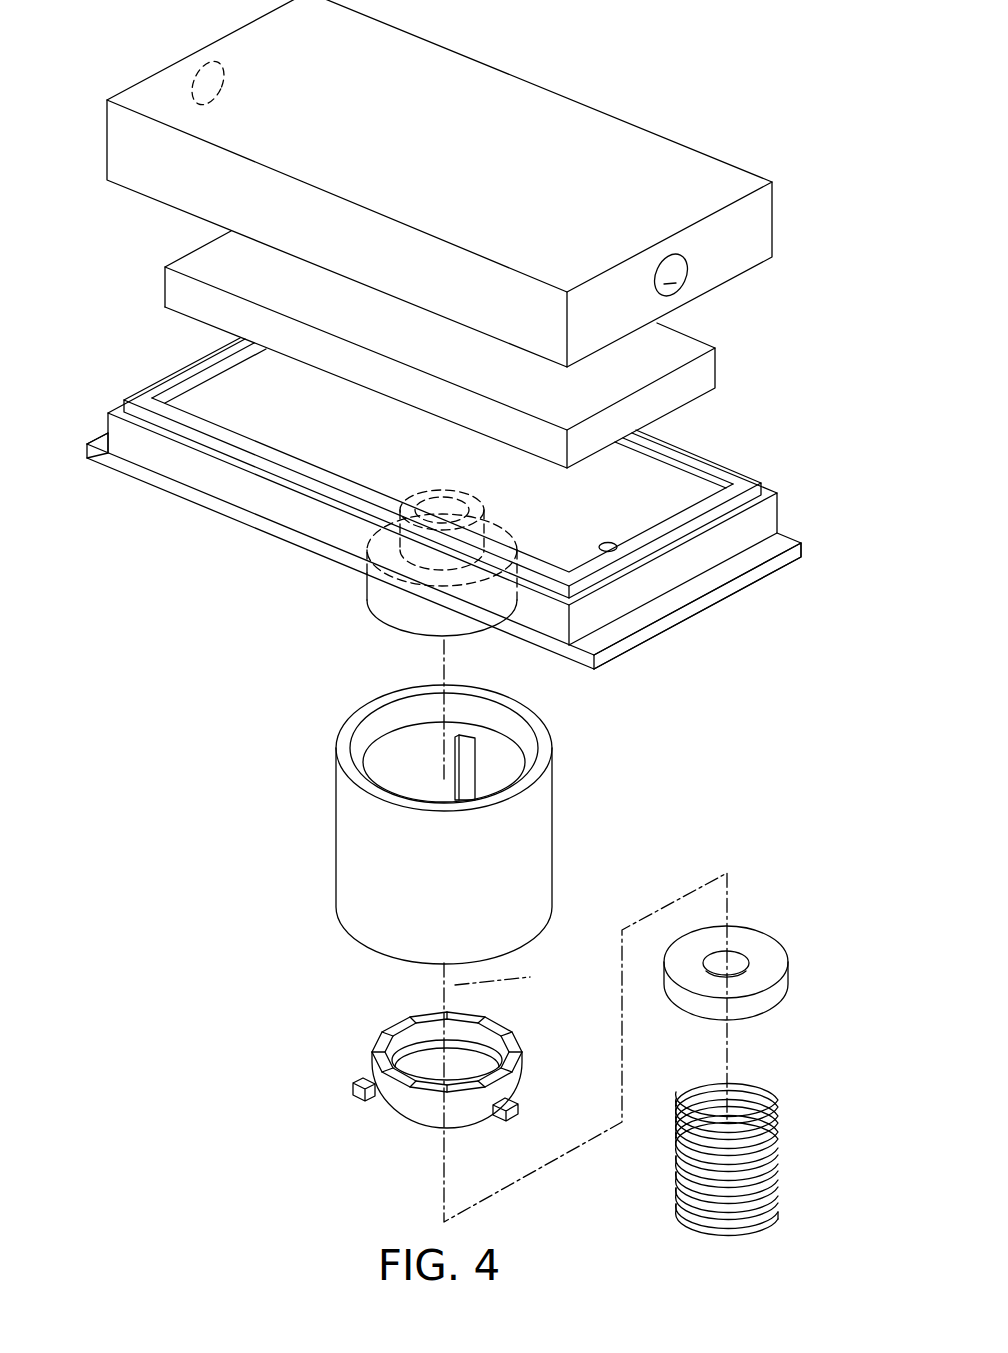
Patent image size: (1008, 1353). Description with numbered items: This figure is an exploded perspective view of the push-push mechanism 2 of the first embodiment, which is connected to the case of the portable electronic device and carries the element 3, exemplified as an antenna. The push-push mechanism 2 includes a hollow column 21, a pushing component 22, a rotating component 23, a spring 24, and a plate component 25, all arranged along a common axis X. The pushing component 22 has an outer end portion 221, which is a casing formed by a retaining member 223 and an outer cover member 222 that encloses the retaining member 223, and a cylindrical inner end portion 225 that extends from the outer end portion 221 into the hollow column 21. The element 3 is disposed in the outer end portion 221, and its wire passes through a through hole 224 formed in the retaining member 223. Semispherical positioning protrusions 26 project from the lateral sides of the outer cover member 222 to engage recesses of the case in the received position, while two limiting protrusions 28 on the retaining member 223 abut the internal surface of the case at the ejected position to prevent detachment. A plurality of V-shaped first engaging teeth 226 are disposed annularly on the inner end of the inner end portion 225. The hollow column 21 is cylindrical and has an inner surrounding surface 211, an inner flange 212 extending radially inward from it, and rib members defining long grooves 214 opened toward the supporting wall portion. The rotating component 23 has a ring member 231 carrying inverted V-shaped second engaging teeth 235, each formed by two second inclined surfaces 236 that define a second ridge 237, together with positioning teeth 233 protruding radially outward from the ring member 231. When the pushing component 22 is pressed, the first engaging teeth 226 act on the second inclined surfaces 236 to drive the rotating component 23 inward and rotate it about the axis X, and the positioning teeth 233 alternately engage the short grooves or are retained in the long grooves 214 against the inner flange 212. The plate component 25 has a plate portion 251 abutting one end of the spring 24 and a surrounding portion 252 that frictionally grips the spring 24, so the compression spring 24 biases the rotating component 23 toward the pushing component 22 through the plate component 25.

The push-push mechanism 2 is at (650, 85).
The element 3 is at (718, 368).
The hollow column 21 is at (586, 830).
The pushing component 22 is at (190, 695).
The rotating component 23 is at (333, 1055).
The spring 24 is at (780, 1150).
The plate component 25 is at (798, 977).
The positioning protrusion 26 is at (688, 268).
The limiting protrusion 28 is at (95, 457).
The inner surrounding surface 211 is at (368, 727).
The inner flange 212 is at (462, 730).
The long groove 214 is at (467, 770).
The outer end portion 221 is at (200, 545).
The outer cover member 222 is at (650, 152).
The retaining member 223 is at (780, 512).
The through hole 224 is at (608, 547).
The inner end portion 225 is at (330, 603).
The first engaging teeth 226 is at (445, 636).
The ring member 231 is at (512, 1088).
The positioning teeth 233 is at (352, 1086).
The second engaging teeth 235 is at (400, 1073).
The second inclined surfaces 236 is at (437, 1088).
The second ridge 237 is at (418, 1085).
The plate portion 251 is at (768, 955).
The surrounding portion 252 is at (767, 1000).